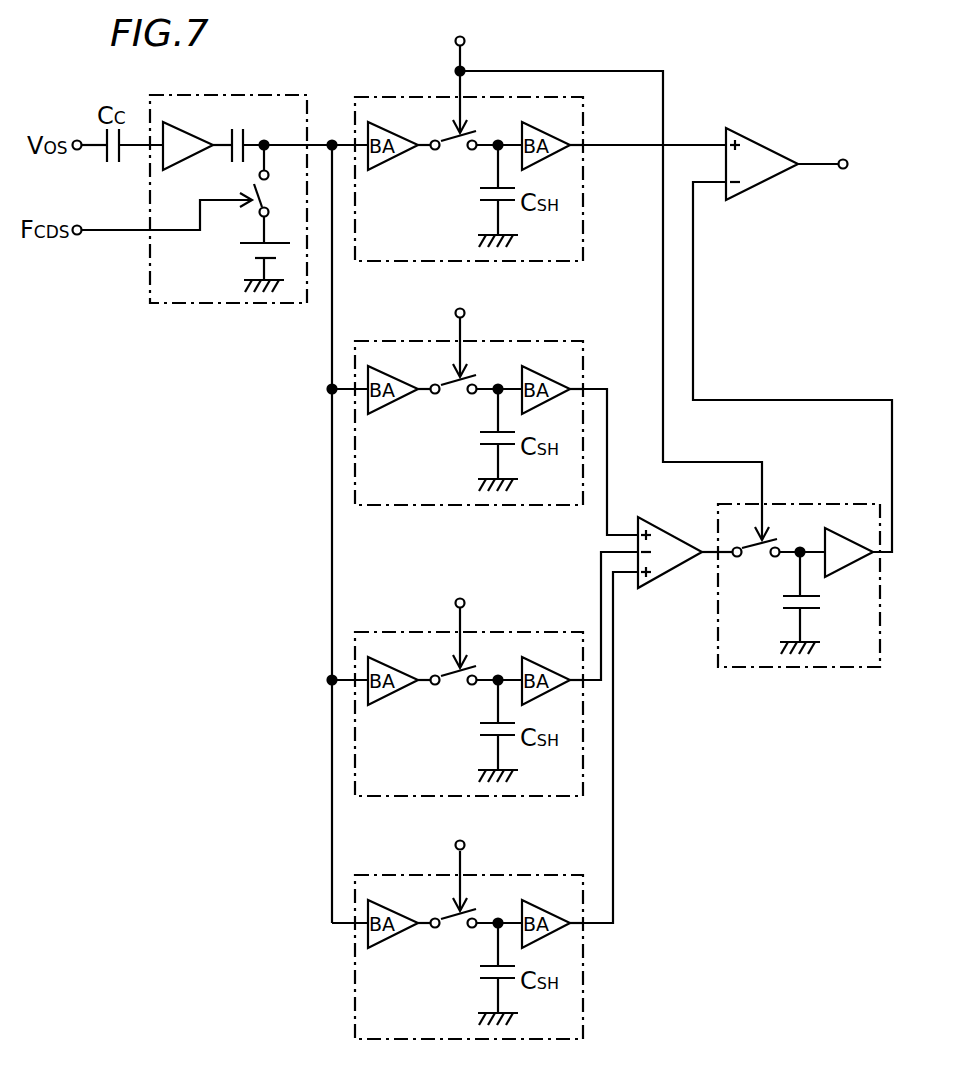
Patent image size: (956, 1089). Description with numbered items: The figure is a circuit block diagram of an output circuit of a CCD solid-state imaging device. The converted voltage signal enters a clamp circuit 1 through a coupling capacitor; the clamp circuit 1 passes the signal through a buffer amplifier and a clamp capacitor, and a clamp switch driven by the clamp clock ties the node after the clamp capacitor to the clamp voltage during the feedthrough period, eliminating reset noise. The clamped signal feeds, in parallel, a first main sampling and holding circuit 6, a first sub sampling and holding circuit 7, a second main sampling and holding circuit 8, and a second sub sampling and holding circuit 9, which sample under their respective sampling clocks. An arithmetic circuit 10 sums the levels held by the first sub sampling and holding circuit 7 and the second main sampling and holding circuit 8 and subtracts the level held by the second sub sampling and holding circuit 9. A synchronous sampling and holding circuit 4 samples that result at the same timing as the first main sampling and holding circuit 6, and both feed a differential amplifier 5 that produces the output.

The clamp circuit 1 is at (228, 304).
The synchronous sampling and holding circuit 4 is at (815, 668).
The differential amplifier 5 is at (762, 158).
The first main sampling and holding circuit 6 is at (428, 96).
The first sub sampling and holding circuit 7 is at (506, 340).
The second main sampling and holding circuit 8 is at (507, 873).
The second sub sampling and holding circuit 9 is at (428, 632).
The arithmetic circuit 10 is at (665, 568).